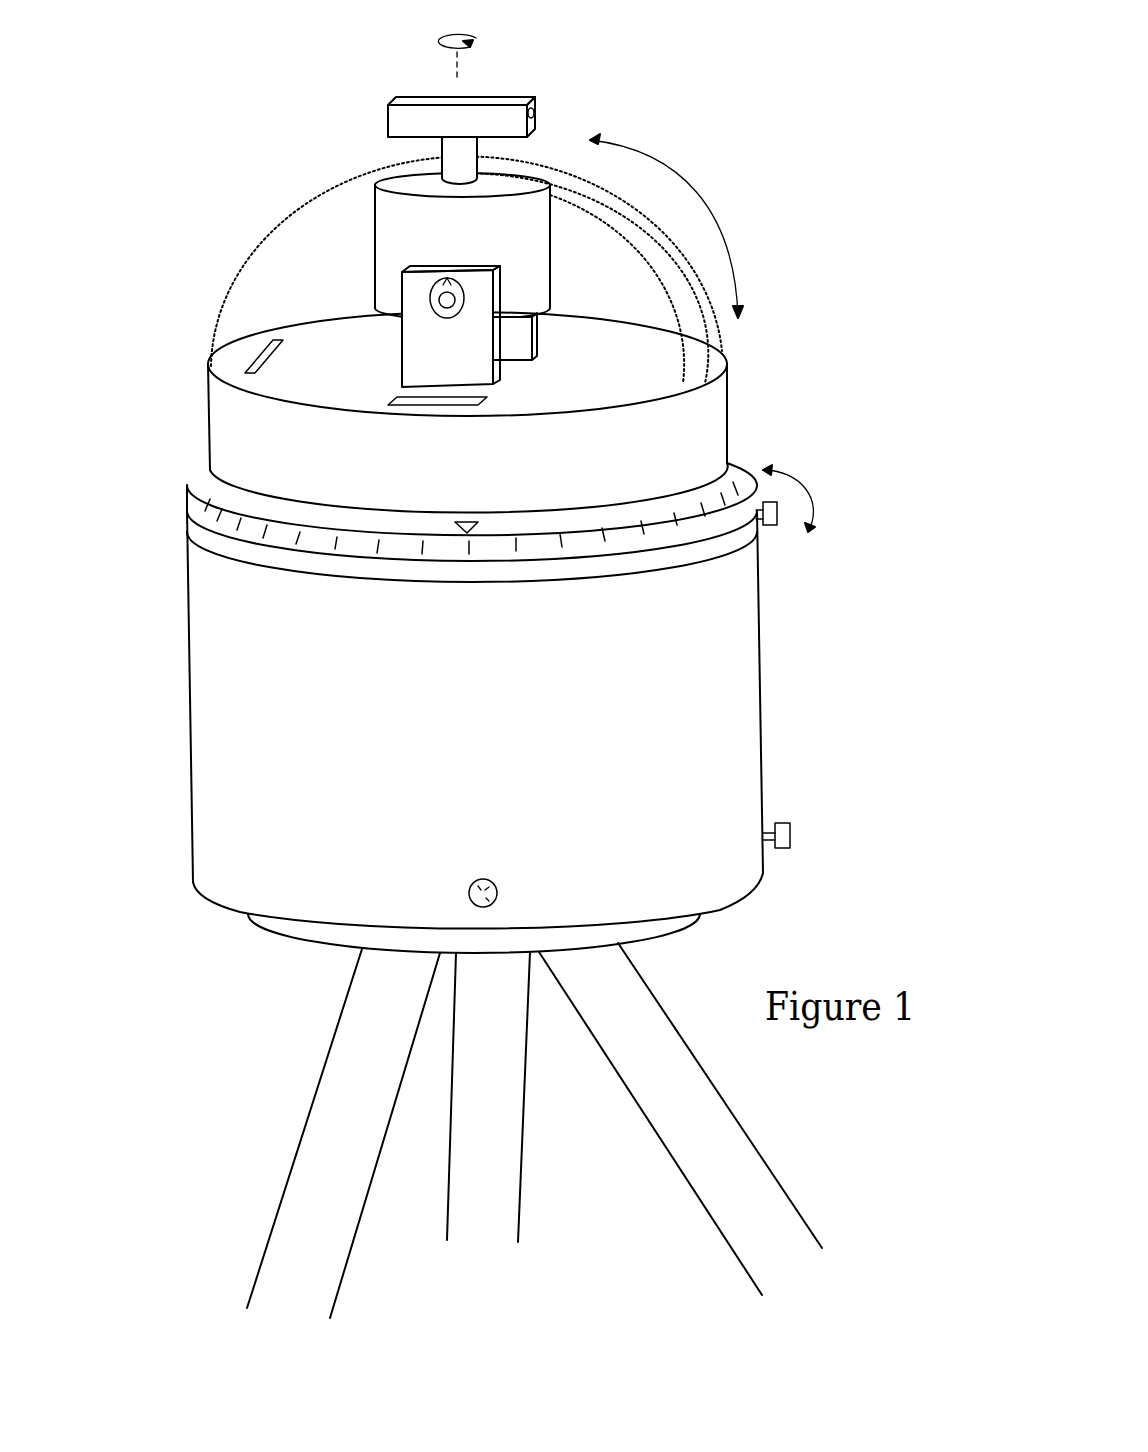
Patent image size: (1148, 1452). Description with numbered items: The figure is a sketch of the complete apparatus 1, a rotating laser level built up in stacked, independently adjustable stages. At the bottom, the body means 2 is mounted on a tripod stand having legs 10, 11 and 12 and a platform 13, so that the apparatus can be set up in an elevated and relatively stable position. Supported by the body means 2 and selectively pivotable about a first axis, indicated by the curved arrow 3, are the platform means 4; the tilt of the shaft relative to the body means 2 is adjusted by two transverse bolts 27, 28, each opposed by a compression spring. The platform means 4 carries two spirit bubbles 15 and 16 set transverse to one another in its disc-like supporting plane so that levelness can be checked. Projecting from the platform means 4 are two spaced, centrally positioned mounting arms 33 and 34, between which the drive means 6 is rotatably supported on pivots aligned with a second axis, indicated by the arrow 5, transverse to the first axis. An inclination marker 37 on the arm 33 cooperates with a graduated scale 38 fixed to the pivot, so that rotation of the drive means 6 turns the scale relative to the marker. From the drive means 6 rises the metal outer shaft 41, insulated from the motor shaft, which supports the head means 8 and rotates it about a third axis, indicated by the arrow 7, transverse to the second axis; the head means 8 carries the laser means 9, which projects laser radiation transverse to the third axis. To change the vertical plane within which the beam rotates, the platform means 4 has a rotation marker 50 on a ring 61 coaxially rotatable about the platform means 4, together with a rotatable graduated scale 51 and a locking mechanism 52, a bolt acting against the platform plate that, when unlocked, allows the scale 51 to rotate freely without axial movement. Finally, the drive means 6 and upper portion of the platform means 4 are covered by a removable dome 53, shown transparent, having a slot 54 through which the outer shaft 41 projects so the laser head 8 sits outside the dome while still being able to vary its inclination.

The apparatus 1 is at (518, 720).
The body means 2 is at (728, 687).
The first axis 3 is at (803, 498).
The platform means 4 is at (213, 452).
The second axis 5 is at (666, 226).
The drive means 6 is at (385, 182).
The third axis 7 is at (457, 47).
The head means 8 is at (395, 118).
The laser means 9 is at (535, 112).
The leg 10 is at (655, 990).
The leg 11 is at (327, 1073).
The leg 12 is at (462, 982).
The platform 13 is at (402, 946).
The spirit bubble 15 is at (255, 358).
The spirit bubble 16 is at (385, 400).
The transverse bolt 27 is at (790, 833).
The transverse bolt 28 is at (470, 900).
The mounting arm 33 is at (407, 310).
The mounting arm 34 is at (523, 337).
The inclination marker 37 is at (447, 280).
The graduated scale 38 is at (430, 292).
The outer shaft 41 is at (477, 153).
The rotation marker 50 is at (457, 523).
The graduated scale 51 is at (187, 535).
The locking mechanism 52 is at (776, 522).
The dome 53 is at (228, 282).
The slot 54 is at (680, 313).
The ring 61 is at (732, 470).